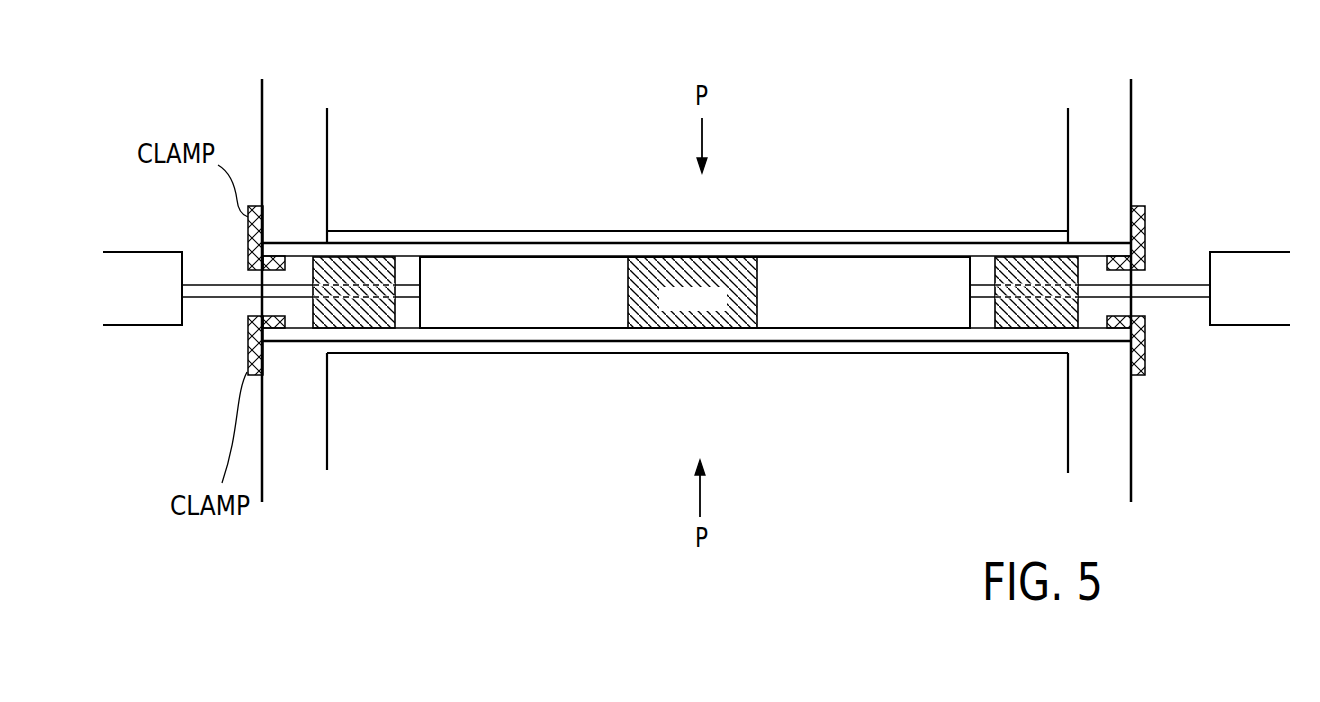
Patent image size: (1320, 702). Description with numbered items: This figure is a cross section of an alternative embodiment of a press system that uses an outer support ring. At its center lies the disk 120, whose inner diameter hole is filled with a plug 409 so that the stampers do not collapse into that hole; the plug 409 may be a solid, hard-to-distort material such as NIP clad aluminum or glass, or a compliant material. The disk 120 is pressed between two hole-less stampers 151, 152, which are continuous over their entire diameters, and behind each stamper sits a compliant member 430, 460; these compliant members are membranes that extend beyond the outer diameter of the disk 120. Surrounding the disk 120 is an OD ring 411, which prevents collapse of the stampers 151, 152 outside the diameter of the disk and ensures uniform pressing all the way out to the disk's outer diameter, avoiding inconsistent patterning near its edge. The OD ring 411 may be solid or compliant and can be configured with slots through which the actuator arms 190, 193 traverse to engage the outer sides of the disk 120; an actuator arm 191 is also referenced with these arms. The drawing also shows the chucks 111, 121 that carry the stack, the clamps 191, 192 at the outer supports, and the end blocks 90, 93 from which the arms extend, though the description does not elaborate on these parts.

The actuator 90 is at (143, 300).
The actuator 93 is at (1272, 293).
The chuck 111 is at (397, 190).
The disk 120 is at (605, 300).
The chuck 121 is at (428, 458).
The hole-less stamper 151 is at (877, 250).
The hole-less stamper 152 is at (852, 333).
The actuator arm 190 is at (193, 298).
The actuator arm 191 is at (1145, 217).
The clamp 192 is at (1145, 340).
The actuator arm 193 is at (1187, 283).
The plug 409 is at (740, 177).
The OD ring 411 is at (338, 285).
The compliant member 430 is at (413, 225).
The compliant member 460 is at (495, 348).